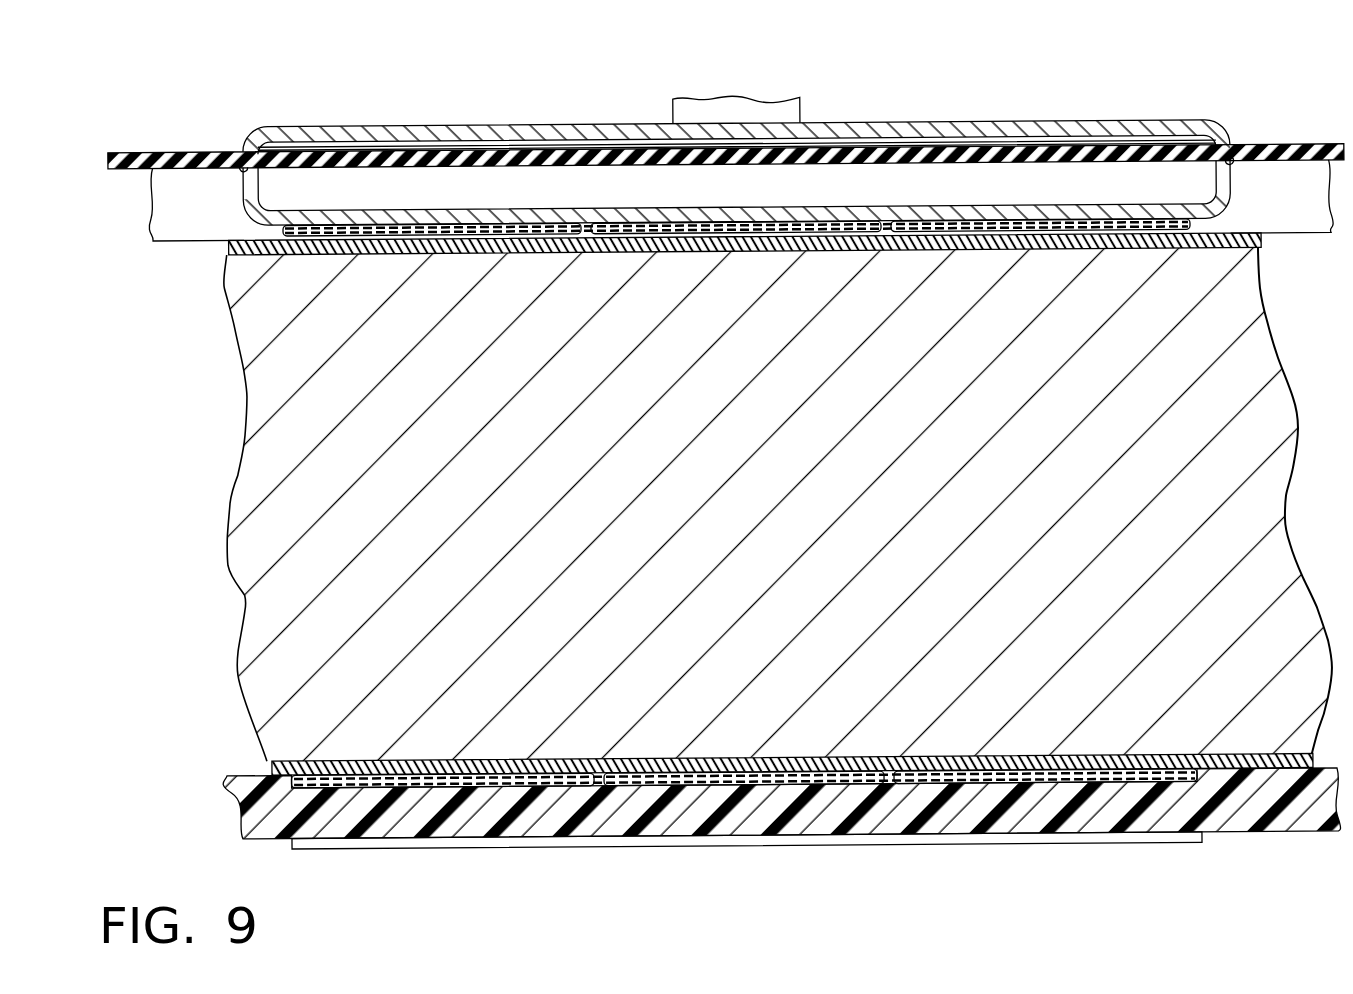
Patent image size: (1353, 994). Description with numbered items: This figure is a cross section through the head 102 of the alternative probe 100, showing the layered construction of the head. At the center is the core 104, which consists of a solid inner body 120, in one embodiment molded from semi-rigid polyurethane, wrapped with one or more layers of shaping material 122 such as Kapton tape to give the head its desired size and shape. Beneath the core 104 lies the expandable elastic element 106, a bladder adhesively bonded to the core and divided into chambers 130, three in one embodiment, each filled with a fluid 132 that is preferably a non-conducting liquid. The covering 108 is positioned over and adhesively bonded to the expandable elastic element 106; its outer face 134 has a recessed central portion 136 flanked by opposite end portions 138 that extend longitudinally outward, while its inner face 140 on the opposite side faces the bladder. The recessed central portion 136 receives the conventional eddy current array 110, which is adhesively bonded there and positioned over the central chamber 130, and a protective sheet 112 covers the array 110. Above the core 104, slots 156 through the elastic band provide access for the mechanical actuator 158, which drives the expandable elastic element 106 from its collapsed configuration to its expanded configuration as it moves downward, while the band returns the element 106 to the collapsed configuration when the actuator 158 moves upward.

The probe 100 is at (1248, 71).
The head 102 is at (231, 698).
The core 104 is at (1240, 788).
The expandable elastic element 106 is at (758, 798).
The covering 108 is at (204, 783).
The eddy current array 110 is at (545, 838).
The protective sheet 112 is at (632, 845).
The inner body 120 is at (243, 400).
The shaping material 122 is at (224, 250).
The chambers 130 is at (483, 773).
The fluid 132 is at (1040, 780).
The outer face 134 is at (283, 864).
The recessed central portion 136 is at (383, 843).
The end portions 138 is at (1213, 842).
The inner face 140 is at (1315, 754).
The slots 156 is at (247, 170).
The mechanical actuator 158 is at (873, 122).